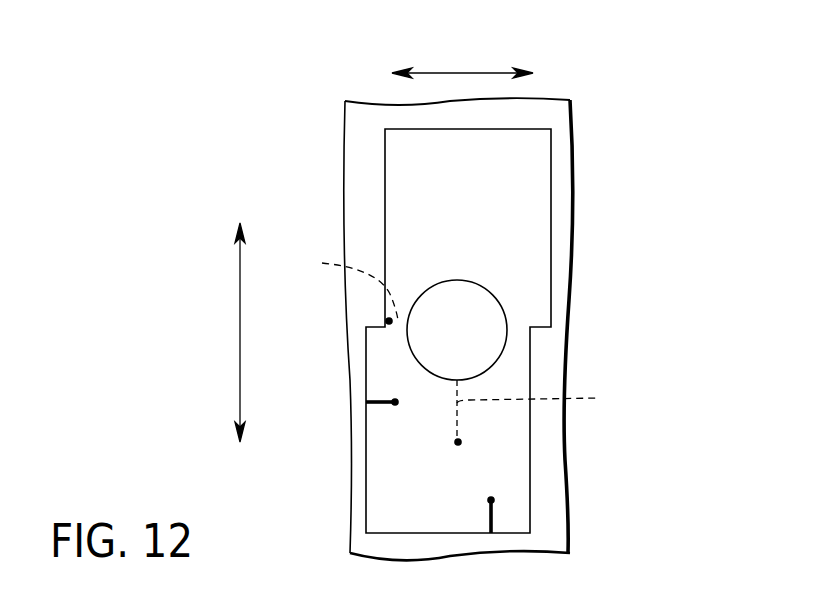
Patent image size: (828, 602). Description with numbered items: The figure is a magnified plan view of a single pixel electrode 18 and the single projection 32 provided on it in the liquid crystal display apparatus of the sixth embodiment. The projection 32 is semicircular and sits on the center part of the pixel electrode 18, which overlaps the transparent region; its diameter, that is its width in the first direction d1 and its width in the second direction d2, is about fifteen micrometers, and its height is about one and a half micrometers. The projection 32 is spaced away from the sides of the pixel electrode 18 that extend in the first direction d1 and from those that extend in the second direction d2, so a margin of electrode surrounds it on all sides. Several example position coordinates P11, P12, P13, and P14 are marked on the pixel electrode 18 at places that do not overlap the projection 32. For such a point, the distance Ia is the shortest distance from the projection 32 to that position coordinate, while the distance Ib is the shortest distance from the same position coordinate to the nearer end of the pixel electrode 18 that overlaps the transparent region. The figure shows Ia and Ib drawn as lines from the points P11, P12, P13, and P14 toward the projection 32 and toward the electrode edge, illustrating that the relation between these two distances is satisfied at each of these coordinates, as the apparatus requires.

The pixel electrode 18 is at (532, 180).
The projection 32 is at (485, 302).
The shortest distance la Ia is at (461, 345).
The shortest distance lb Ib is at (388, 400).
The position coordinate P11 is at (389, 321).
The position coordinate P12 is at (395, 406).
The position coordinate P13 is at (457, 446).
The position coordinate P14 is at (491, 496).
The first direction d1 is at (240, 345).
The second direction d2 is at (462, 73).